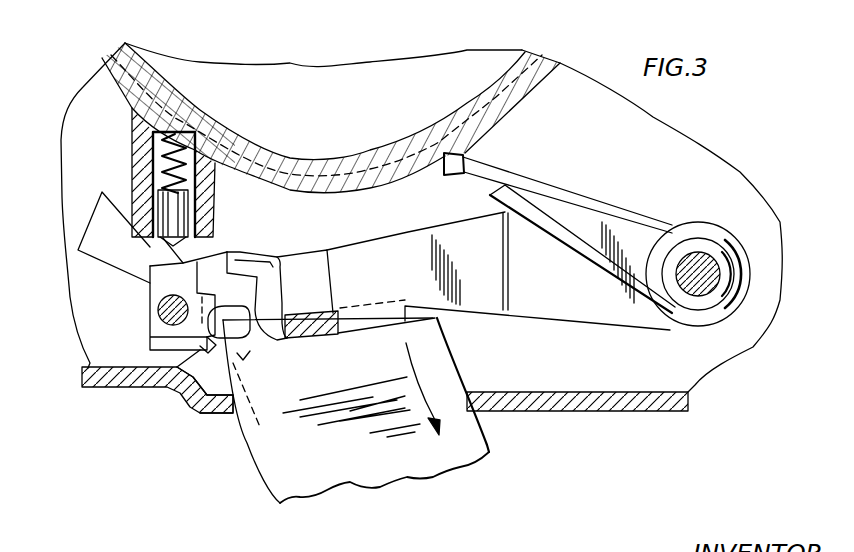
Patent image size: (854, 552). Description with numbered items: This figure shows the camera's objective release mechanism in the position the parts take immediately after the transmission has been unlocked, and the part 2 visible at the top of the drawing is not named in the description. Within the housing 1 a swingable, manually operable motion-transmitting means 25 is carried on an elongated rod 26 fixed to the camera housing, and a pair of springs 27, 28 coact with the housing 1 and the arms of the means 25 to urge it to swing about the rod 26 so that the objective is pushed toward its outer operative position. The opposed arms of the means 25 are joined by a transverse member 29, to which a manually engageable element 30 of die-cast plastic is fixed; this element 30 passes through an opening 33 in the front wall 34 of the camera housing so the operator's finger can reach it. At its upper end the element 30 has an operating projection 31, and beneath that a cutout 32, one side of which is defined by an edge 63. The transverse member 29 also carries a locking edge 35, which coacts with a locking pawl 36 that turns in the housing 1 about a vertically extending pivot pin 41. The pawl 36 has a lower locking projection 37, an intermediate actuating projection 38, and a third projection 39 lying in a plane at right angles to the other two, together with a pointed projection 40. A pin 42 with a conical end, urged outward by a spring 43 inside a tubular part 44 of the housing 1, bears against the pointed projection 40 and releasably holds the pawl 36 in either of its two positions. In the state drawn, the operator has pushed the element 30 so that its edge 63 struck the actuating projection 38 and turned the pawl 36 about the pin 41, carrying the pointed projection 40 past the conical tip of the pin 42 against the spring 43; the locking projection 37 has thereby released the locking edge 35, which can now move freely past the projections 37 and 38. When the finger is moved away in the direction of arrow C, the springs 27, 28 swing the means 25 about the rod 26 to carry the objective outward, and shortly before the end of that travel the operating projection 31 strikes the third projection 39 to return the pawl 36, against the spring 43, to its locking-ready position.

The housing 1 is at (497, 100).
The housing 2 is at (395, 77).
The manually operable motion-transmitting means 25 is at (485, 292).
The rod 26 is at (683, 292).
The spring 27 is at (578, 243).
The spring 28 is at (578, 243).
The transverse member 29 is at (378, 317).
The manually engageable element 30 is at (342, 468).
The operating projection 31 is at (257, 335).
The cutout 32 is at (243, 365).
The opening 33 is at (233, 418).
The front wall 34 is at (98, 388).
The locking edge 35 is at (330, 255).
The locking pawl 36 is at (148, 292).
The locking projection 37 is at (206, 200).
The actuating projection 38 is at (213, 263).
The third projection 39 is at (170, 383).
The pointed projection 40 is at (148, 258).
The pivot pin 41 is at (158, 313).
The pin 42 is at (157, 194).
The spring 43 is at (188, 131).
The tubular part 44 is at (140, 143).
The edge 63 is at (255, 413).